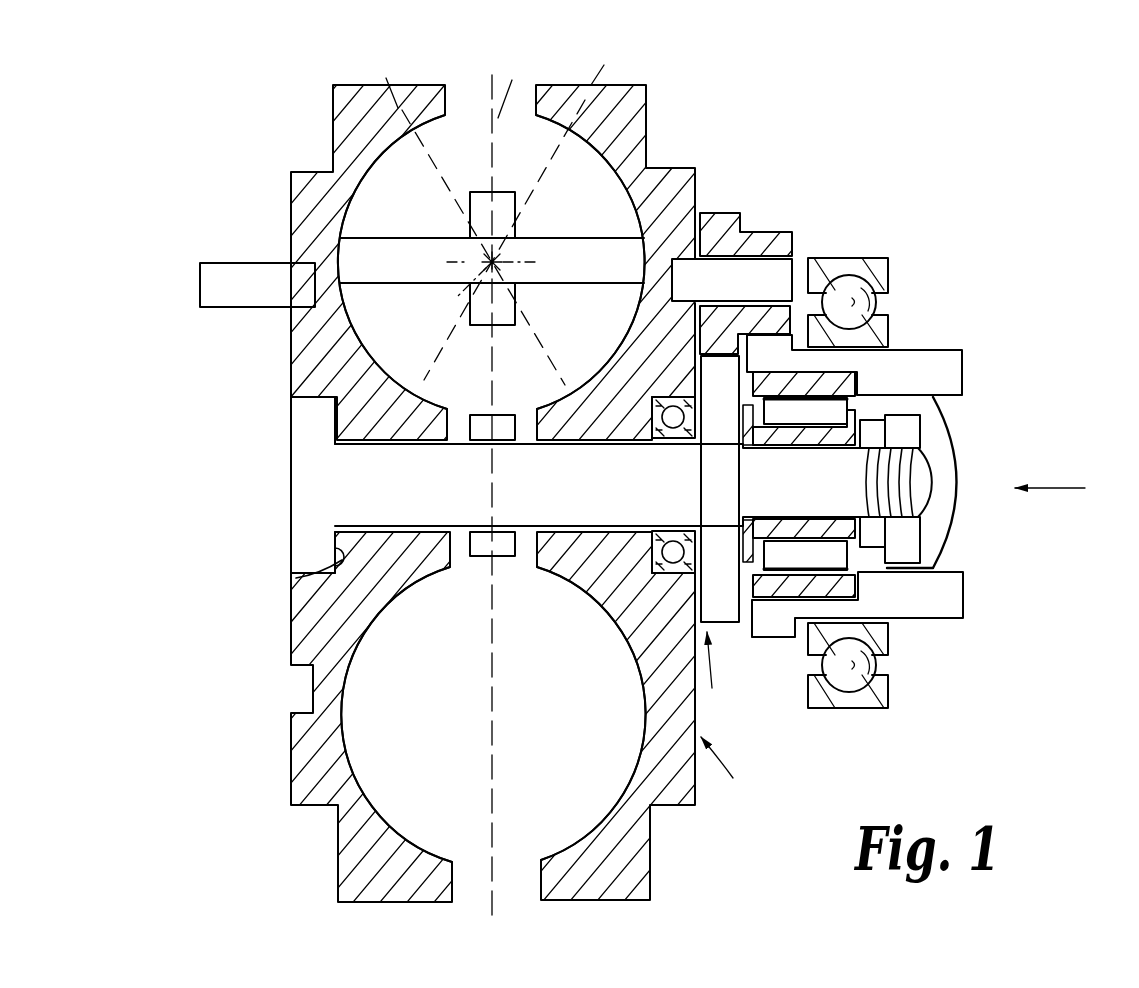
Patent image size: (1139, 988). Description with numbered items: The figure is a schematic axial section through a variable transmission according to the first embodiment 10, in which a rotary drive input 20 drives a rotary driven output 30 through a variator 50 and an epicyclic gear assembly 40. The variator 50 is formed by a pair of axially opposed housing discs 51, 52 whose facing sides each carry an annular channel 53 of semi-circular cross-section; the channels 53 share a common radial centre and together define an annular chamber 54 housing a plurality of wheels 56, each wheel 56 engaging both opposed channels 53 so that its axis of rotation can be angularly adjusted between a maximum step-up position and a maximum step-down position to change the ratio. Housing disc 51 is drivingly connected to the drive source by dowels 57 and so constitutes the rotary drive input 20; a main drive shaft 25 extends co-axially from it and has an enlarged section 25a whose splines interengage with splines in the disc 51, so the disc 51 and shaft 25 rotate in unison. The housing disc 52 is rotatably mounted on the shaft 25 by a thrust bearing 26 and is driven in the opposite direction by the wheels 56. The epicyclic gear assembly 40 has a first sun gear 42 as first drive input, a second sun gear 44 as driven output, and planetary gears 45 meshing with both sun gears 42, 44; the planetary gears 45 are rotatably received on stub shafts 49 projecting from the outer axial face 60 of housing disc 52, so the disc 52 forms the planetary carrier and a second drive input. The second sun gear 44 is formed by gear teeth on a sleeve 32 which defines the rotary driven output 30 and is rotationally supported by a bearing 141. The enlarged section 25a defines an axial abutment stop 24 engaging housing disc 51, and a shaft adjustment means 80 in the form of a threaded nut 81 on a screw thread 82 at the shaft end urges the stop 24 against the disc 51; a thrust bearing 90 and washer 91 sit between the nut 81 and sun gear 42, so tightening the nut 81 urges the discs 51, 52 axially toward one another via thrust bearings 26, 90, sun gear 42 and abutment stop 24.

The first embodiment 10 is at (569, 494).
The rotary drive input 20 is at (262, 393).
The axial abutment stop 24 is at (292, 592).
The main drive shaft 25 is at (360, 478).
The enlarged section 25a is at (300, 550).
The thrust bearing 26 is at (664, 588).
The rotary driven output 30 is at (968, 360).
The sleeve 32 is at (910, 360).
The epicyclic gear assembly 40 is at (848, 255).
The first sun gear 42 is at (728, 600).
The second sun gear 44 is at (775, 627).
The planetary gear 45 is at (776, 232).
The stub shaft 49 is at (718, 296).
The variator 50 is at (569, 494).
The housing disc 51 is at (302, 179).
The housing disc 52 is at (640, 122).
The annular channel 53 is at (377, 368).
The annular chamber 54 is at (375, 316).
The wheel 56 is at (402, 258).
The dowel 57 is at (243, 285).
The outer axial face 60 is at (700, 182).
The shaft adjustment means 80 is at (940, 438).
The threaded nut 81 is at (912, 542).
The screw thread 82 is at (925, 478).
The thrust bearing 90 is at (870, 588).
The washer 91 is at (933, 565).
The bearing 141 is at (893, 268).